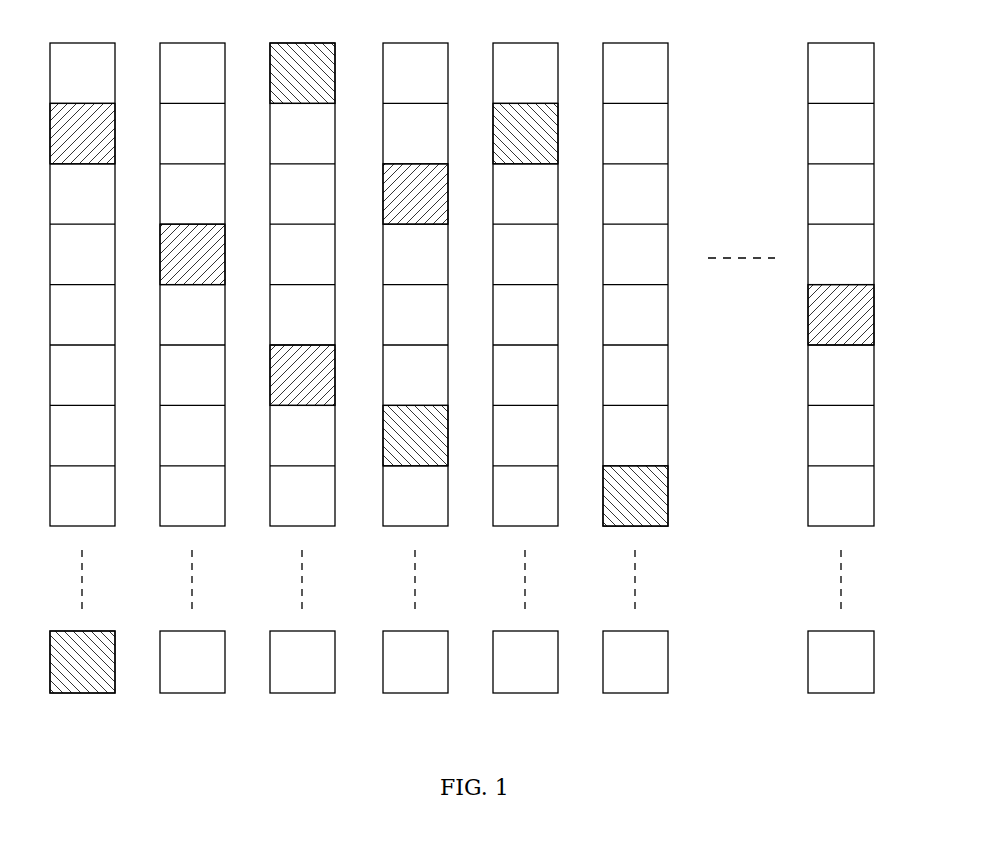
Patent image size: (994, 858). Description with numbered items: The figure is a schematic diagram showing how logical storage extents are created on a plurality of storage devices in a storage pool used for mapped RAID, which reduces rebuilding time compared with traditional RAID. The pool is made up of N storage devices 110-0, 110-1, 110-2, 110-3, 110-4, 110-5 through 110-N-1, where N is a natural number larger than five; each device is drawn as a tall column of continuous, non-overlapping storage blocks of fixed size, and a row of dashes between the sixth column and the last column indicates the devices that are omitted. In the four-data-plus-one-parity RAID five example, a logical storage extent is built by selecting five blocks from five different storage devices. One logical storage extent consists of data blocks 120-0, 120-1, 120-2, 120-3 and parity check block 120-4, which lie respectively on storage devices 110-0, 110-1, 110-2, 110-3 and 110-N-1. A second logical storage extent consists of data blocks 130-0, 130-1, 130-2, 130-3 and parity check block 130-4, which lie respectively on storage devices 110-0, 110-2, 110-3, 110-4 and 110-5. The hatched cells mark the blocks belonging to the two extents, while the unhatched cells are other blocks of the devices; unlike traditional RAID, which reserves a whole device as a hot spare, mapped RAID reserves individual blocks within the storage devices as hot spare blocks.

The storage device 110-0 is at (56, 43).
The storage device 110-1 is at (166, 43).
The storage device 110-2 is at (276, 43).
The storage device 110-3 is at (389, 43).
The storage device 110-4 is at (499, 43).
The storage device 110-5 is at (609, 43).
The storage device 110-N-1 is at (814, 44).
The data block 120-0 is at (108, 146).
The data block 120-1 is at (218, 267).
The data block 120-2 is at (328, 388).
The data block 120-3 is at (441, 206).
The parity check block 120-4 is at (866, 327).
The data block 130-0 is at (108, 674).
The data block 130-1 is at (328, 86).
The data block 130-2 is at (441, 448).
The data block 130-3 is at (551, 146).
The parity check block 130-4 is at (661, 508).